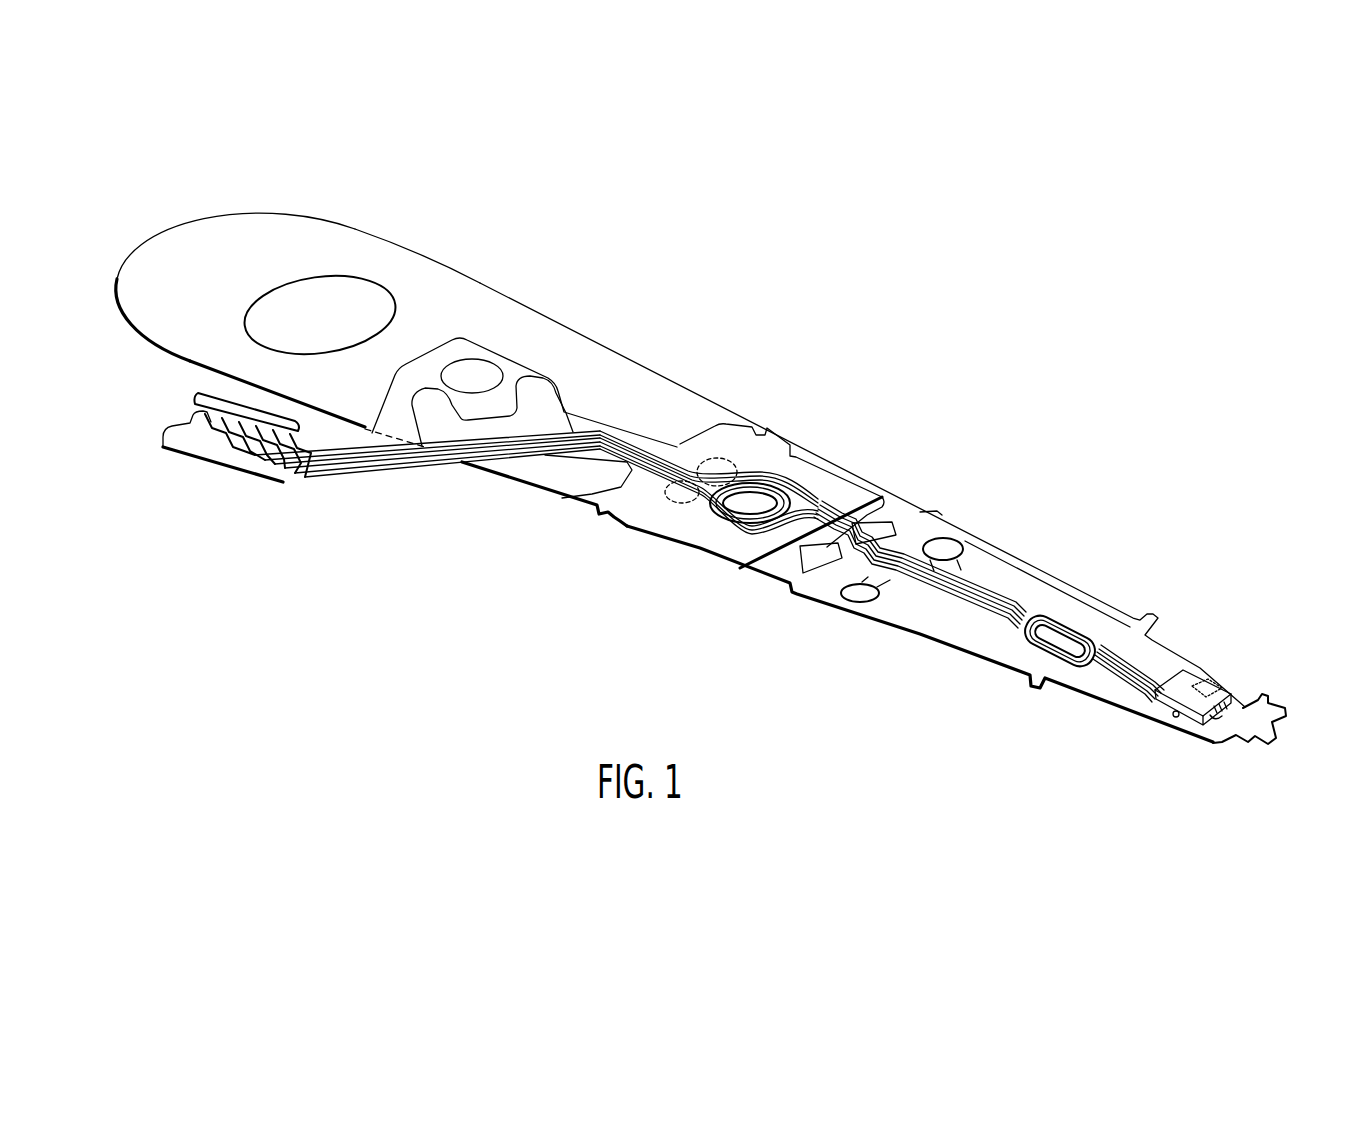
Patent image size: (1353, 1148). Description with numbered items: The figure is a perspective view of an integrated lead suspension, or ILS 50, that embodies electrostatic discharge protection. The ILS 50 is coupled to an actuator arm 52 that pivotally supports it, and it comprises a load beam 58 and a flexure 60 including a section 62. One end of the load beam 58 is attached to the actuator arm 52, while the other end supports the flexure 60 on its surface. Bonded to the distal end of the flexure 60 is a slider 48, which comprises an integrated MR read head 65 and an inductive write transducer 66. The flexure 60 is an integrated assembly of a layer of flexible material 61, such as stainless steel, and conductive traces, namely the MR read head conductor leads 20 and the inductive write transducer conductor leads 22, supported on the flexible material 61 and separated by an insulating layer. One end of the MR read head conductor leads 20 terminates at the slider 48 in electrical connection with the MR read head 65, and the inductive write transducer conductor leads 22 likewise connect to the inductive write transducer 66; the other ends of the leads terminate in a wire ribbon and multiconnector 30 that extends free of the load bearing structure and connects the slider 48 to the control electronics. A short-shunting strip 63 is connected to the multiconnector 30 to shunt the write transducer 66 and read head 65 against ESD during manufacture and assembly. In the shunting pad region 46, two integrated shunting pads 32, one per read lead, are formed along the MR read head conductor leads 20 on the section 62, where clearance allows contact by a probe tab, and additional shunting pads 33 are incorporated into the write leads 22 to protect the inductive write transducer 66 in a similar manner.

The MR read head conductor leads 20 is at (983, 617).
The inductive write transducer conductor leads 22 is at (1000, 603).
The multiconnector 30 is at (199, 440).
The shunting pads 32 is at (684, 492).
The additional shunting pads 33 is at (717, 477).
The shunting pad region 46 is at (660, 496).
The slider 48 is at (1190, 682).
The ILS 50 is at (975, 441).
The actuator arm 52 is at (550, 337).
The load beam 58 is at (817, 583).
The flexure 60 is at (1123, 641).
The flexible material 61 is at (1002, 567).
The section 62 is at (838, 492).
The short-shunting strip 63 is at (190, 394).
The integrated MR read head 65 is at (1218, 712).
The inductive write transducer 66 is at (1265, 706).